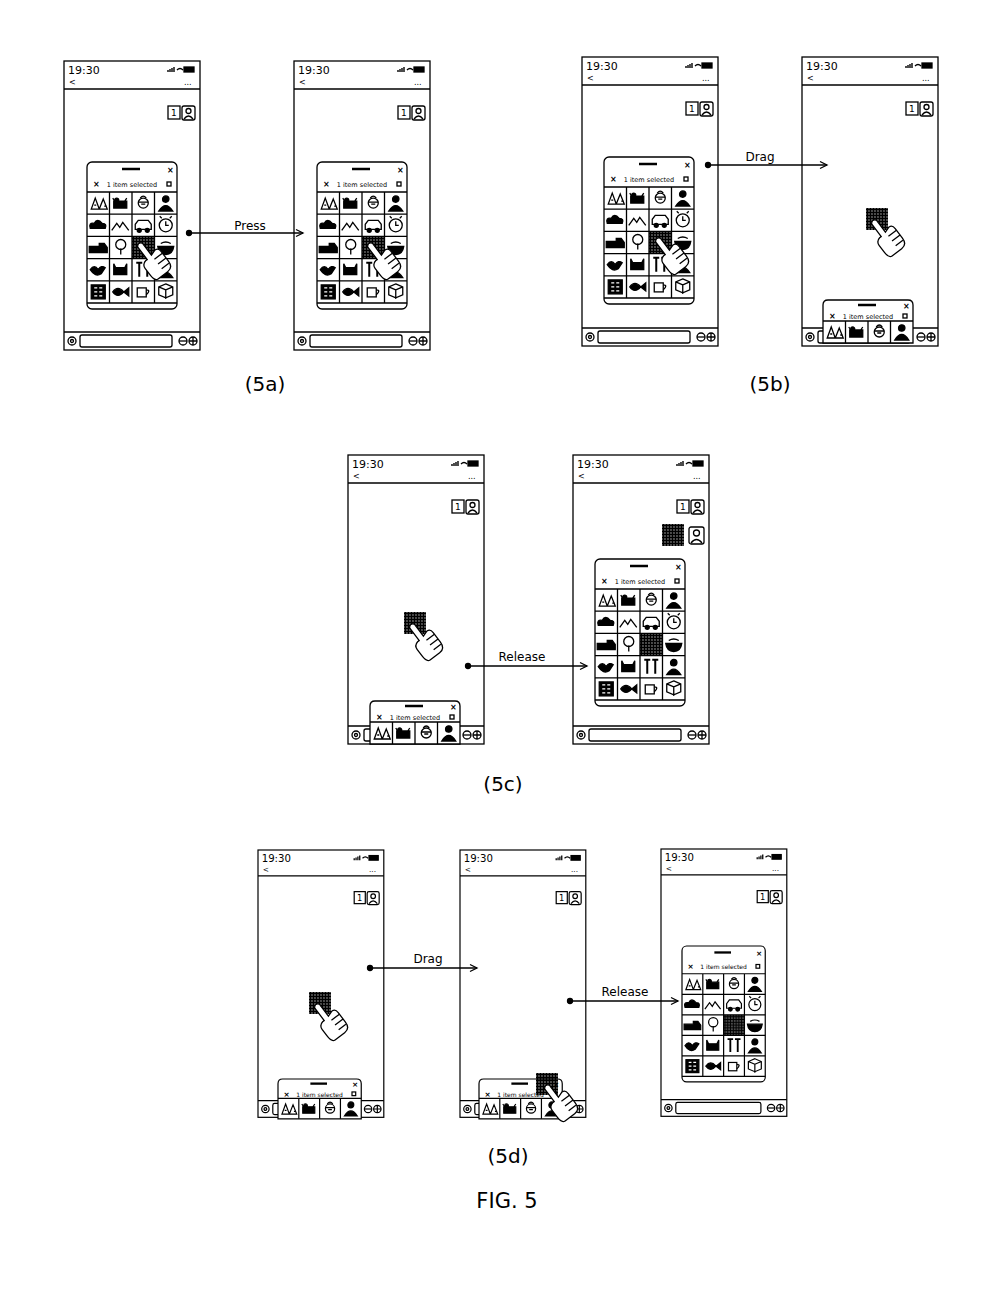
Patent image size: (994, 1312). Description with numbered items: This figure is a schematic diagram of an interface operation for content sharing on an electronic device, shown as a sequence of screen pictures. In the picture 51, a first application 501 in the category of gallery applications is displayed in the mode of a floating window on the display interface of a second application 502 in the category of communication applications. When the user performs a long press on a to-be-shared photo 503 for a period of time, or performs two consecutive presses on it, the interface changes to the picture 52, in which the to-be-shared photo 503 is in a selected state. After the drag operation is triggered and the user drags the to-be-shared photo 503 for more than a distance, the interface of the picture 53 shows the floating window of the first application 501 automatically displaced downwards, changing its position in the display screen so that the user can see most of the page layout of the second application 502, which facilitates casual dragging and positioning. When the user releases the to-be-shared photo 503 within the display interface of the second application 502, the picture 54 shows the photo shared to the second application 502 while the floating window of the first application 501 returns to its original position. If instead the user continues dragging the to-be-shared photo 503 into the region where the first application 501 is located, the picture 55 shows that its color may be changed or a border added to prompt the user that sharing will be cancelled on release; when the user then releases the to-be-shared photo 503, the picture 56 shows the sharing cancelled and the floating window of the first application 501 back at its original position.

The picture 51 is at (137, 68).
The picture 52 is at (378, 68).
The picture 53 is at (888, 66).
The picture 54 is at (652, 461).
The picture 55 is at (538, 860).
The picture 56 is at (735, 854).
The first application 501 is at (89, 170).
The second application 502 is at (191, 136).
The to-be-shared photo 503 is at (91, 225).